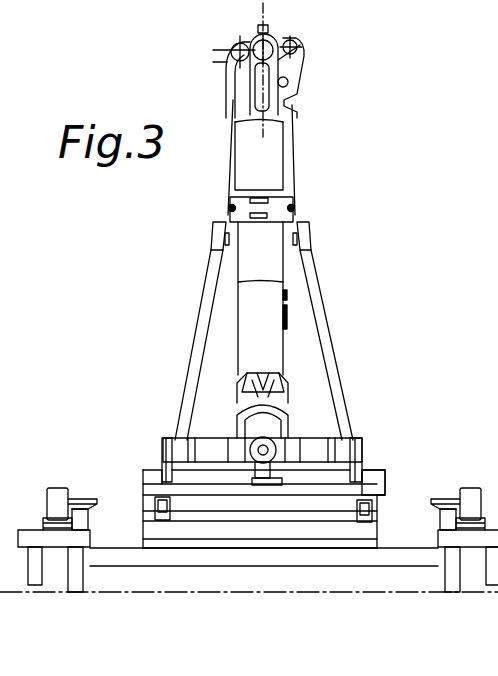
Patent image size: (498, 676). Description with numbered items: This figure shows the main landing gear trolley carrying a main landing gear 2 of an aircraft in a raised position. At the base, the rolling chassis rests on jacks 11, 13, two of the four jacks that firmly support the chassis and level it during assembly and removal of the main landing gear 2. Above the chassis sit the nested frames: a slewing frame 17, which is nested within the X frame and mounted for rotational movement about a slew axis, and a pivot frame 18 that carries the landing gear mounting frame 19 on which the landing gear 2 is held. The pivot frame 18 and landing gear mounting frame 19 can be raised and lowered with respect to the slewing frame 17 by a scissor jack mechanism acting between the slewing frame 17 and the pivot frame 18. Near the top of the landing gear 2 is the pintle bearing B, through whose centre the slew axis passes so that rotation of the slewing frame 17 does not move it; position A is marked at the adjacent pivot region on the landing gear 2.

The main landing gear 2 is at (313, 442).
The jack 11 is at (445, 498).
The jack 13 is at (76, 497).
The slewing frame 17 is at (170, 531).
The pivot frame 18 is at (380, 482).
The landing gear mounting frame 19 is at (208, 480).
The pivot point A is at (228, 67).
The pintle bearing B is at (292, 56).